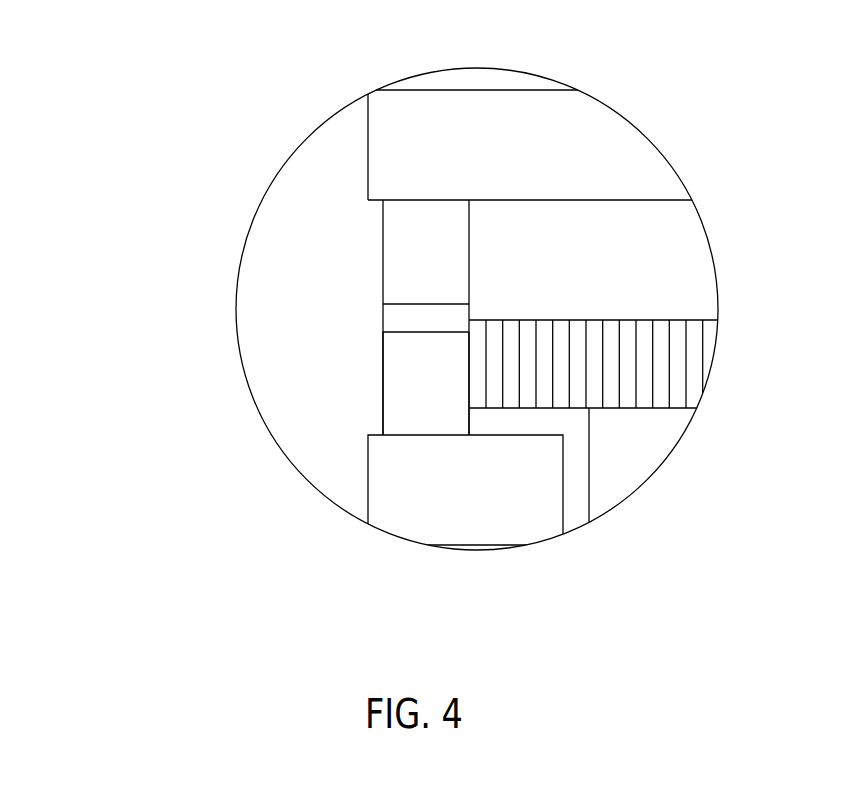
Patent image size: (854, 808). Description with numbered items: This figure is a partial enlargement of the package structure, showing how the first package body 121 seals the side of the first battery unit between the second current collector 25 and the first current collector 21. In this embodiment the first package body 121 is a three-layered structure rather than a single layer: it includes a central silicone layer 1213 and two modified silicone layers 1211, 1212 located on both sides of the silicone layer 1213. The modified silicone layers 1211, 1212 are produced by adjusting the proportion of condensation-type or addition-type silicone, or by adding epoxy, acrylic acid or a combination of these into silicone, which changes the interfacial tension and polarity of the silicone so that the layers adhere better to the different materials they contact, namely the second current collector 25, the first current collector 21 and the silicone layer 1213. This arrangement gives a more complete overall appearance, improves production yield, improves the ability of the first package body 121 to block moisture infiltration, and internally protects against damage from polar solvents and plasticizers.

The second current collector 25 is at (605, 135).
The first package body 121 is at (258, 332).
The modified silicone layer 1211 is at (392, 257).
The modified silicone layer 1212 is at (407, 394).
The silicone layer 1213 is at (390, 318).
The first current collector 21 is at (400, 513).